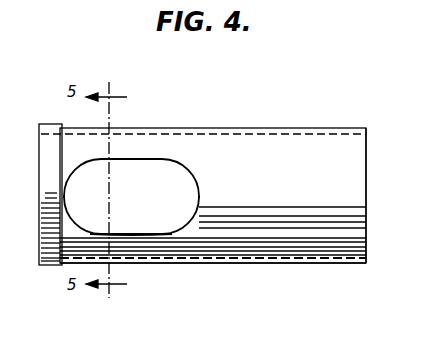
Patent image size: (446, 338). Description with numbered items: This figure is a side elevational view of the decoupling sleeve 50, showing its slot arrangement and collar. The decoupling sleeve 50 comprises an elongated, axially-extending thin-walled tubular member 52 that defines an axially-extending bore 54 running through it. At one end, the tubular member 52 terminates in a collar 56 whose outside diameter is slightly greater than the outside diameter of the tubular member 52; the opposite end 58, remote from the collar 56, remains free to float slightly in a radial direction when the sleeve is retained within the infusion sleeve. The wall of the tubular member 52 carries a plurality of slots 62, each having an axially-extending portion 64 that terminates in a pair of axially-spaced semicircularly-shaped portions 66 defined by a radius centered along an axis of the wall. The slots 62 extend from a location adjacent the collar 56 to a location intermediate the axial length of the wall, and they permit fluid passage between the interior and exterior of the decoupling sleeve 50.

The decoupling sleeve 50 is at (161, 268).
The tubular member 52 is at (228, 264).
The axially-extending bore 54 is at (368, 241).
The collar 56 is at (50, 266).
The end 58 is at (367, 197).
The slots 62 is at (120, 158).
The axially-extending portions 64 is at (118, 233).
The semicircularly-shaped portions 66 is at (65, 191).